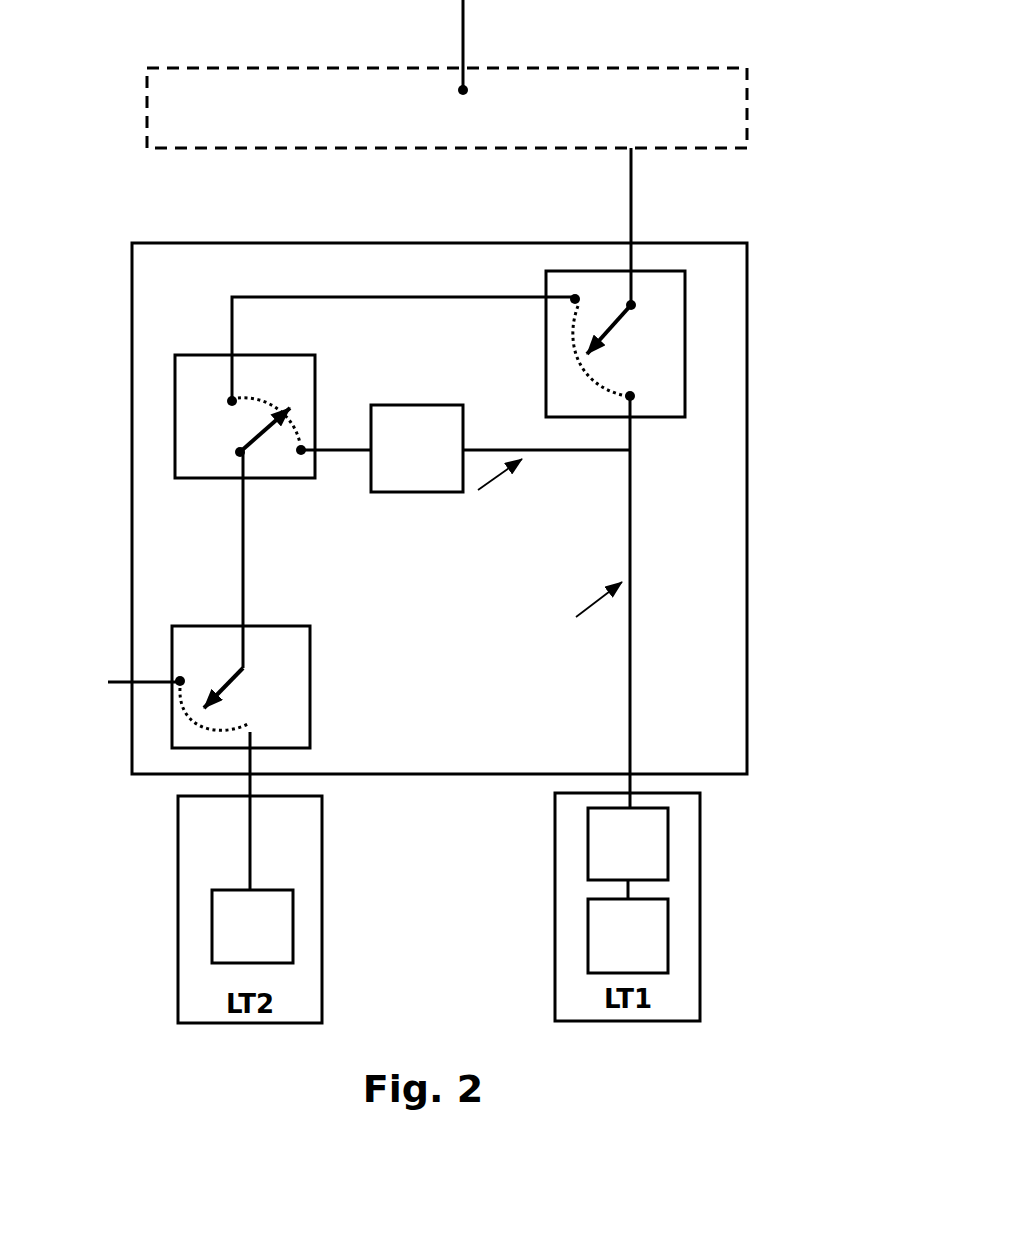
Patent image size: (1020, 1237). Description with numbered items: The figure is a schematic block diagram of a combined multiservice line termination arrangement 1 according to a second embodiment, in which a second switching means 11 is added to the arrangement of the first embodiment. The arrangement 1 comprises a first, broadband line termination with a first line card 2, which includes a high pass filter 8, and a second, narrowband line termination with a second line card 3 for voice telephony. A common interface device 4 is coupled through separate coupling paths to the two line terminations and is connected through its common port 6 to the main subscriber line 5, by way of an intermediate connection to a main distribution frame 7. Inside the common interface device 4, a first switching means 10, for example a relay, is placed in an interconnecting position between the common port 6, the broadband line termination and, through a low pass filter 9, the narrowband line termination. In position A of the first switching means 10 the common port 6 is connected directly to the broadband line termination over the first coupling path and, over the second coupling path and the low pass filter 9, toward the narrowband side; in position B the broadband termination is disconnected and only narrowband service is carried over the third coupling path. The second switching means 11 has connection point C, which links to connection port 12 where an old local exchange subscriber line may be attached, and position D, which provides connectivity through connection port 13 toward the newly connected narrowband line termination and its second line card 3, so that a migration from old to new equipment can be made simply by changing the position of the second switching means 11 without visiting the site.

The combined multiservice line termination arrangement 1 is at (465, 566).
The first line card 2 is at (628, 936).
The second line card 3 is at (252, 926).
The common interface device 4 is at (752, 503).
The main subscriber line 5 is at (482, 45).
The common port 6 is at (636, 230).
The main distribution frame 7 is at (447, 108).
The high pass filter 8 is at (628, 844).
The low pass filter 9 is at (417, 448).
The first switching means 10 is at (316, 428).
The second switching means 11 is at (314, 674).
The connection port 12 is at (118, 679).
The connection port 13 is at (246, 780).